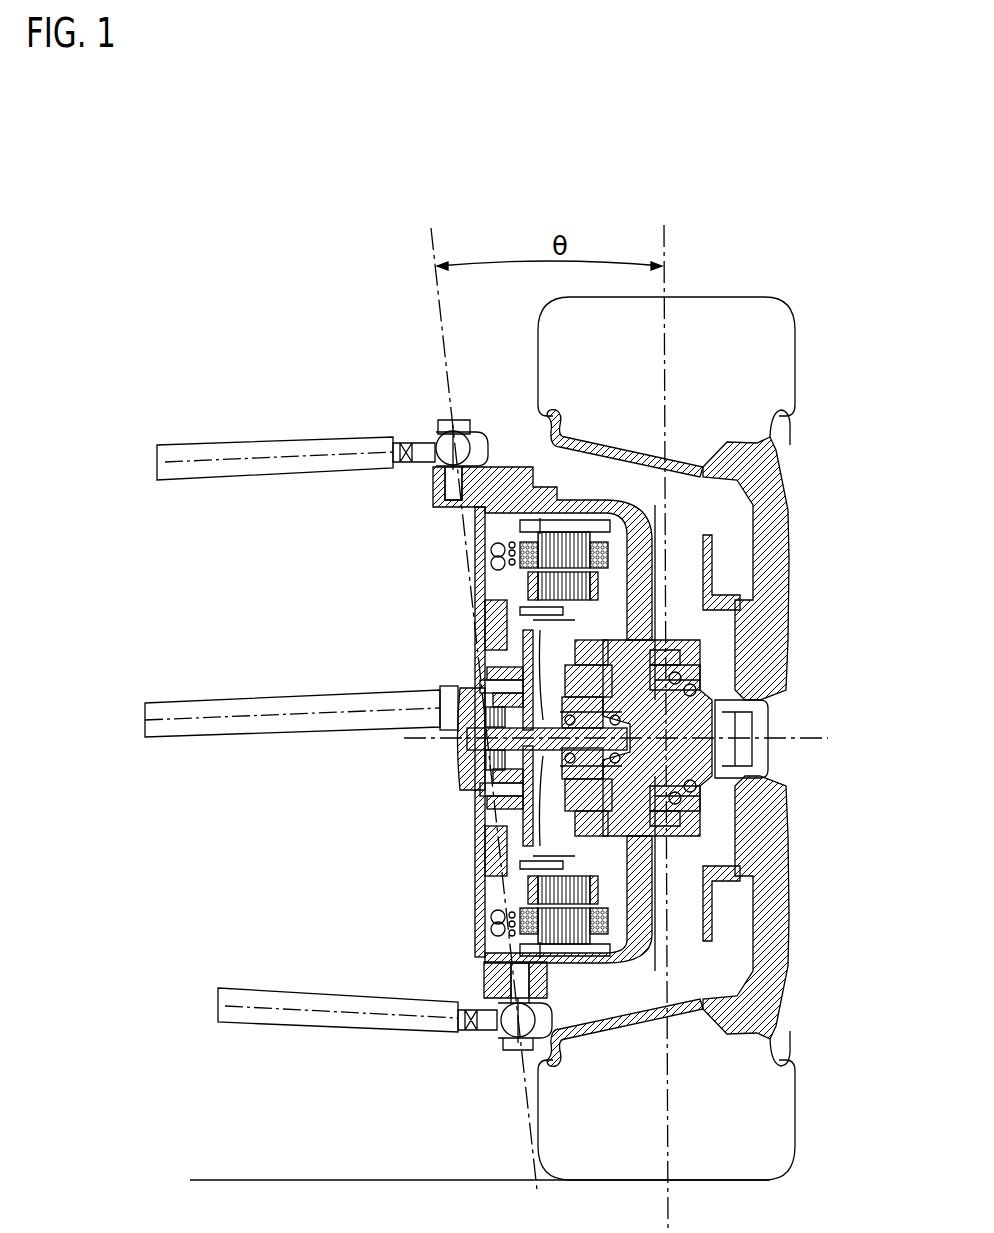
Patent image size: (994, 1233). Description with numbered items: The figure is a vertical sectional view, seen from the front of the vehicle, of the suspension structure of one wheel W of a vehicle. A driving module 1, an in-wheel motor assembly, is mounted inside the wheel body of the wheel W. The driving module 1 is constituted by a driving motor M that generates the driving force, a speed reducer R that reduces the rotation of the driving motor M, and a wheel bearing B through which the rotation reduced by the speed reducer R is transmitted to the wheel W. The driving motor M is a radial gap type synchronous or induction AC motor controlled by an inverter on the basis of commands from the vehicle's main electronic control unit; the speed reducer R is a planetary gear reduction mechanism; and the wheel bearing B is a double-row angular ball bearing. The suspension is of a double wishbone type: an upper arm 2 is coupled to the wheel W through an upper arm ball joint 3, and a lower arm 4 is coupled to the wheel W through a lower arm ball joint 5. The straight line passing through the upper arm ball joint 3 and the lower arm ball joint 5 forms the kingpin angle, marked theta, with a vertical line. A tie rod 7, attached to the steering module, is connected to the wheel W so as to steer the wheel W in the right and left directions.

The driving module 1 is at (458, 862).
The upper arm 2 is at (244, 448).
The upper arm ball joint 3 is at (446, 442).
The lower arm 4 is at (296, 1003).
The lower arm ball joint 5 is at (498, 1034).
The tie rod 7 is at (228, 707).
The driving motor M is at (491, 568).
The speed reducer R is at (545, 633).
The wheel bearing B is at (711, 663).
The wheel W is at (739, 291).